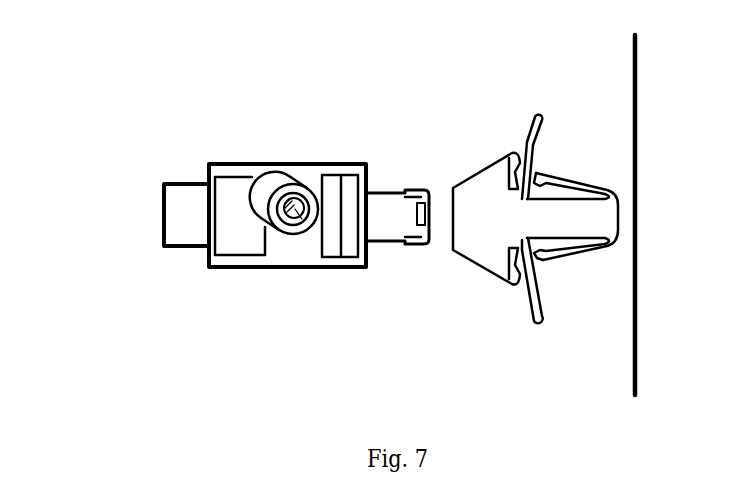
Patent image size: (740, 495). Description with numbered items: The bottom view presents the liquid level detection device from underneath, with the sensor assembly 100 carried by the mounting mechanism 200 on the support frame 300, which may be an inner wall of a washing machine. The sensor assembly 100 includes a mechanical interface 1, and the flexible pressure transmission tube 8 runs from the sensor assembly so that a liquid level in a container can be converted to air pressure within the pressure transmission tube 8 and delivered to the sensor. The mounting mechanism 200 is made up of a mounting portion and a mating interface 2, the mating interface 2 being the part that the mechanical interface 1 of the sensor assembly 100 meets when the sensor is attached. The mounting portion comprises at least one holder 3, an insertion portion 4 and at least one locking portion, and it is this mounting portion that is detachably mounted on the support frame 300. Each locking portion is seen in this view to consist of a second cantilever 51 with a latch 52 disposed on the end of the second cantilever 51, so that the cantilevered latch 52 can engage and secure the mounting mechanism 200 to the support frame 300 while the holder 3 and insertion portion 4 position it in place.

The sensor assembly 100 is at (241, 242).
The mechanical interface 1 is at (387, 200).
The pressure transmission tube 8 is at (262, 197).
The mounting mechanism 200 is at (523, 247).
The mating interface 2 is at (473, 220).
The holder 3 is at (532, 135).
The insertion portion 4 is at (582, 212).
The second cantilever 51 is at (592, 253).
The latch 52 is at (541, 268).
The support frame 300 is at (632, 67).